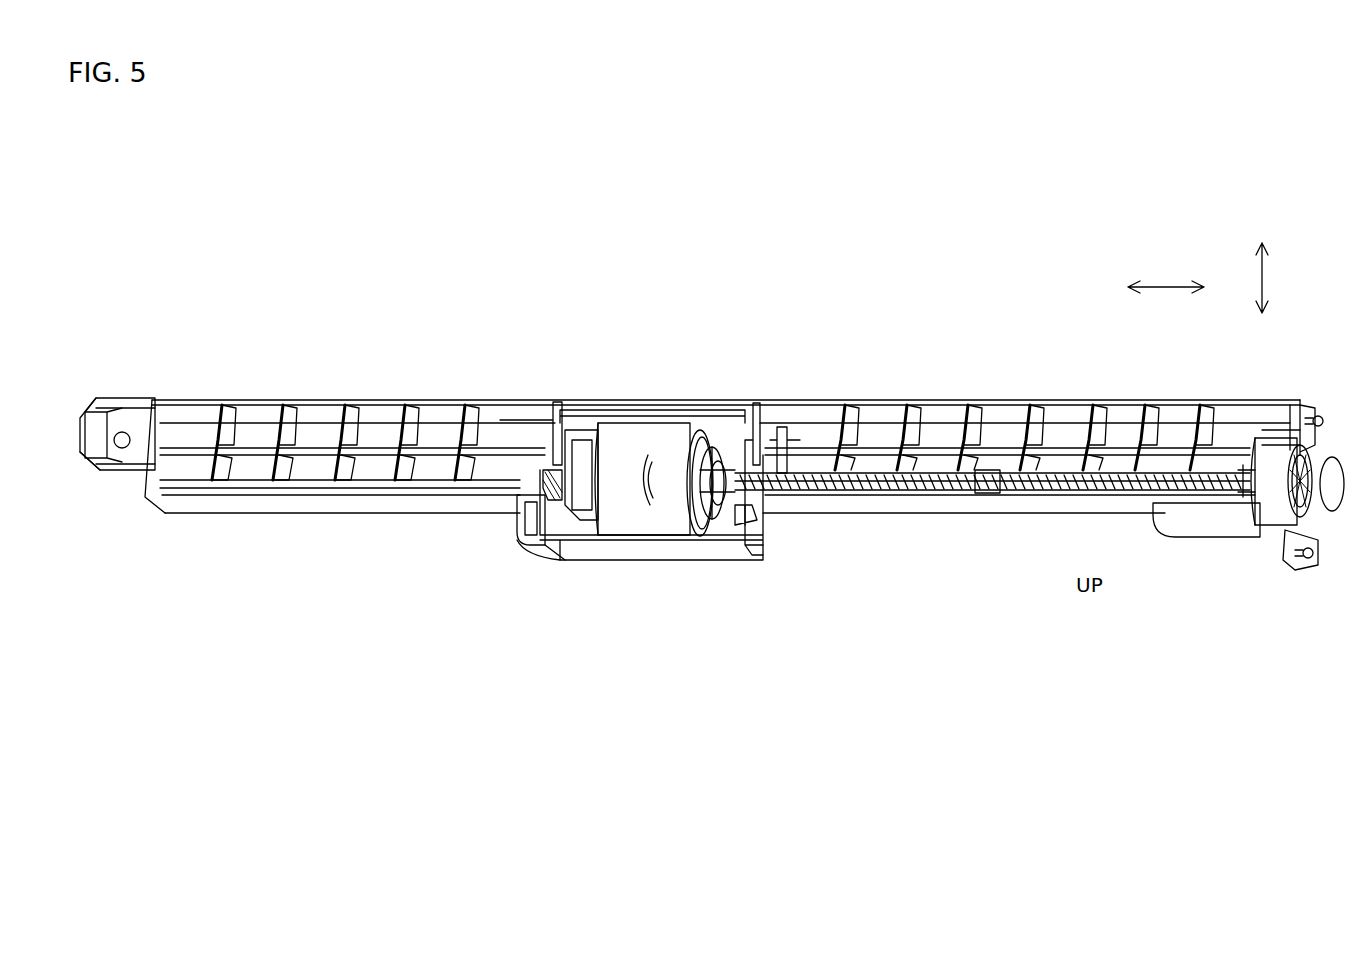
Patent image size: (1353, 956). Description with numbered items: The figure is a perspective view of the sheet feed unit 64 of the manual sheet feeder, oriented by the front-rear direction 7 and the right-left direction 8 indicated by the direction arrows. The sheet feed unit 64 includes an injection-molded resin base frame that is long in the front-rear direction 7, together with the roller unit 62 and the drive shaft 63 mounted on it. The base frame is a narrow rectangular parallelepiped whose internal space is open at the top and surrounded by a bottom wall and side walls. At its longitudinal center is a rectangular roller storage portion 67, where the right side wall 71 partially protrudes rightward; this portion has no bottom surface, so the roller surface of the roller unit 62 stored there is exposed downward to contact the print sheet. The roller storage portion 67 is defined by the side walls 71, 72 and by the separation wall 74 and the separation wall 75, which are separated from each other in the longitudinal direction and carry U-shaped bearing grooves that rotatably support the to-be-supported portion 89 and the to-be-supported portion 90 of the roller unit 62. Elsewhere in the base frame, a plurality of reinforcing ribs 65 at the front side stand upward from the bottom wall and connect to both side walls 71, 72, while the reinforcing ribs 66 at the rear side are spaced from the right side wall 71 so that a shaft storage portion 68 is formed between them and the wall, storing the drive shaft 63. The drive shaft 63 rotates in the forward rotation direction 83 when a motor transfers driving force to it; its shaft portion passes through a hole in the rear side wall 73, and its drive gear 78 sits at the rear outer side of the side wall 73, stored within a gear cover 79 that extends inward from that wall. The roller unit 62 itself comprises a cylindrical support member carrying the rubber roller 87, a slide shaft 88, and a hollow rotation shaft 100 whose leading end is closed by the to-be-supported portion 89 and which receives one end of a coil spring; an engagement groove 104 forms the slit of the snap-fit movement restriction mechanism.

The front-rear direction 7 is at (1160, 283).
The right-left direction 8 is at (1268, 279).
The roller unit 62 is at (593, 522).
The drive shaft 63 is at (1003, 400).
The sheet feed unit 64 is at (243, 292).
The reinforcing ribs 65 is at (377, 405).
The reinforcing ribs 66 is at (1120, 405).
The roller storage portion 67 is at (655, 550).
The shaft storage portion 68 is at (990, 499).
The right side wall 71 is at (890, 505).
The side wall 72 is at (867, 400).
The side wall 73 is at (1308, 405).
The separation wall 74 is at (776, 400).
The separation wall 75 is at (535, 400).
The drive gear 78 is at (1313, 510).
The gear cover 79 is at (1263, 505).
The forward rotation direction 83 is at (1345, 450).
The rubber roller 87 is at (618, 443).
The slide shaft 88 is at (584, 400).
The to-be-supported portion 89 is at (748, 400).
The to-be-supported portion 90 is at (543, 472).
The rotation shaft 100 is at (712, 420).
The engagement groove 104 is at (717, 520).